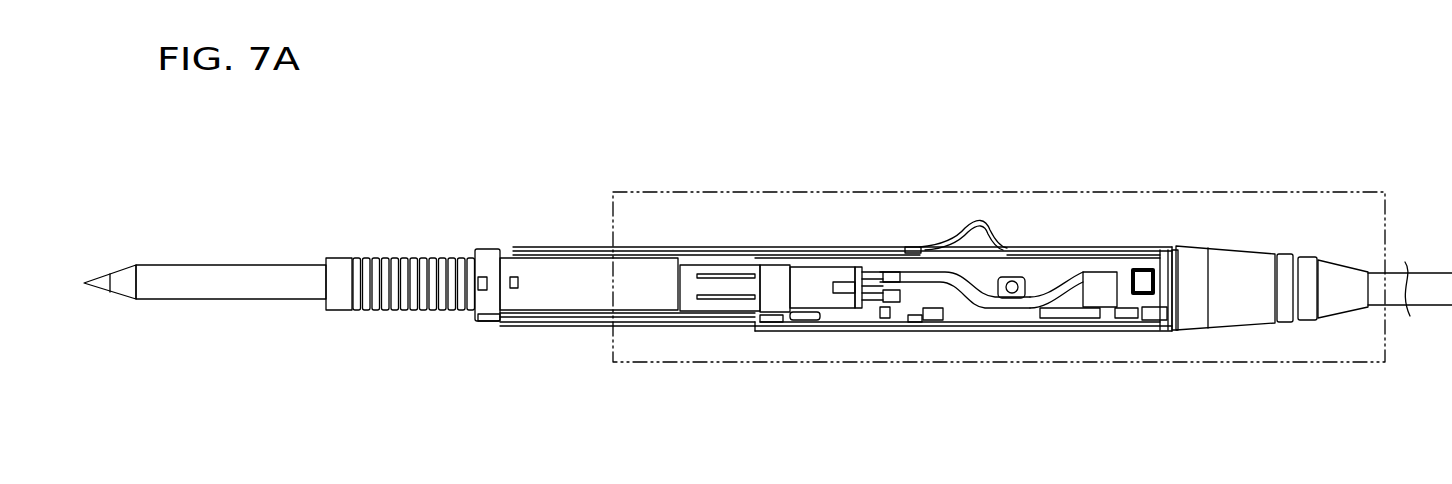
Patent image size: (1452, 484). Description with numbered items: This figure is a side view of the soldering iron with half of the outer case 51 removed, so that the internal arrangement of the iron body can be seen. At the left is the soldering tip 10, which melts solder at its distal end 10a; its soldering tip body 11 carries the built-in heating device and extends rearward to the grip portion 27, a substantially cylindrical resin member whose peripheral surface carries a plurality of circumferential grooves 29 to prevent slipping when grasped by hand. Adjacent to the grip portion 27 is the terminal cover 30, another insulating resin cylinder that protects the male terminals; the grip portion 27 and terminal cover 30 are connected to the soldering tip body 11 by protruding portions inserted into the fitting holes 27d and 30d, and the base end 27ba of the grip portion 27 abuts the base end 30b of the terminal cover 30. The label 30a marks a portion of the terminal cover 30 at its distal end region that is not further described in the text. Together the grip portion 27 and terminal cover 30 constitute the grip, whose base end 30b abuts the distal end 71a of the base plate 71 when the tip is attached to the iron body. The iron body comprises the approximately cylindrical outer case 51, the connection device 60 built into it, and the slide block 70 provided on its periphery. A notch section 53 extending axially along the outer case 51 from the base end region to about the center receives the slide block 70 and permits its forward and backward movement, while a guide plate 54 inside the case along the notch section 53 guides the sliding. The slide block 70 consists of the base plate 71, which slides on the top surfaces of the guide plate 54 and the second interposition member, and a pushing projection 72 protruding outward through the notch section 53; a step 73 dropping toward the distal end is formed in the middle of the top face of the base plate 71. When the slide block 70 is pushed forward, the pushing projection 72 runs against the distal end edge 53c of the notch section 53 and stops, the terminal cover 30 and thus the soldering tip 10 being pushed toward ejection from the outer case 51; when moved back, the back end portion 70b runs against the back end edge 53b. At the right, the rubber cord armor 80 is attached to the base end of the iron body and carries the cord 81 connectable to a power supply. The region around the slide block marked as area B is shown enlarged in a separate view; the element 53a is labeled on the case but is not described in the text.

The soldering tip 10 is at (223, 275).
The distal end 10a is at (96, 287).
The soldering tip body 11 is at (230, 287).
The grip portion 27 is at (343, 300).
The fitting hole 27d is at (486, 276).
The base end of the grip portion 27ba is at (500, 322).
The grooves 29 is at (397, 268).
The terminal cover 30 is at (595, 299).
The sleeve flange 30a is at (490, 286).
The base end of the terminal cover 30b is at (680, 314).
The fitting hole 30d is at (527, 287).
The outer case 51 is at (935, 330).
The notch section 53 is at (869, 200).
The casing upper wall 53a is at (765, 247).
The back end edge of the notch section 53b is at (1160, 247).
The distal end edge of the notch section 53c is at (922, 245).
The guide plate 54 is at (1063, 247).
The connection device 60 is at (848, 334).
The slide block 70 is at (990, 209).
The back end portion of the slide block 70b is at (1032, 247).
The base plate 71 is at (800, 247).
The distal end of the base plate 71a is at (672, 247).
The pushing projection 72 is at (998, 248).
The step 73 is at (752, 247).
The cord armor 80 is at (1242, 312).
The cord 81 is at (1408, 306).
The area B is at (1328, 364).